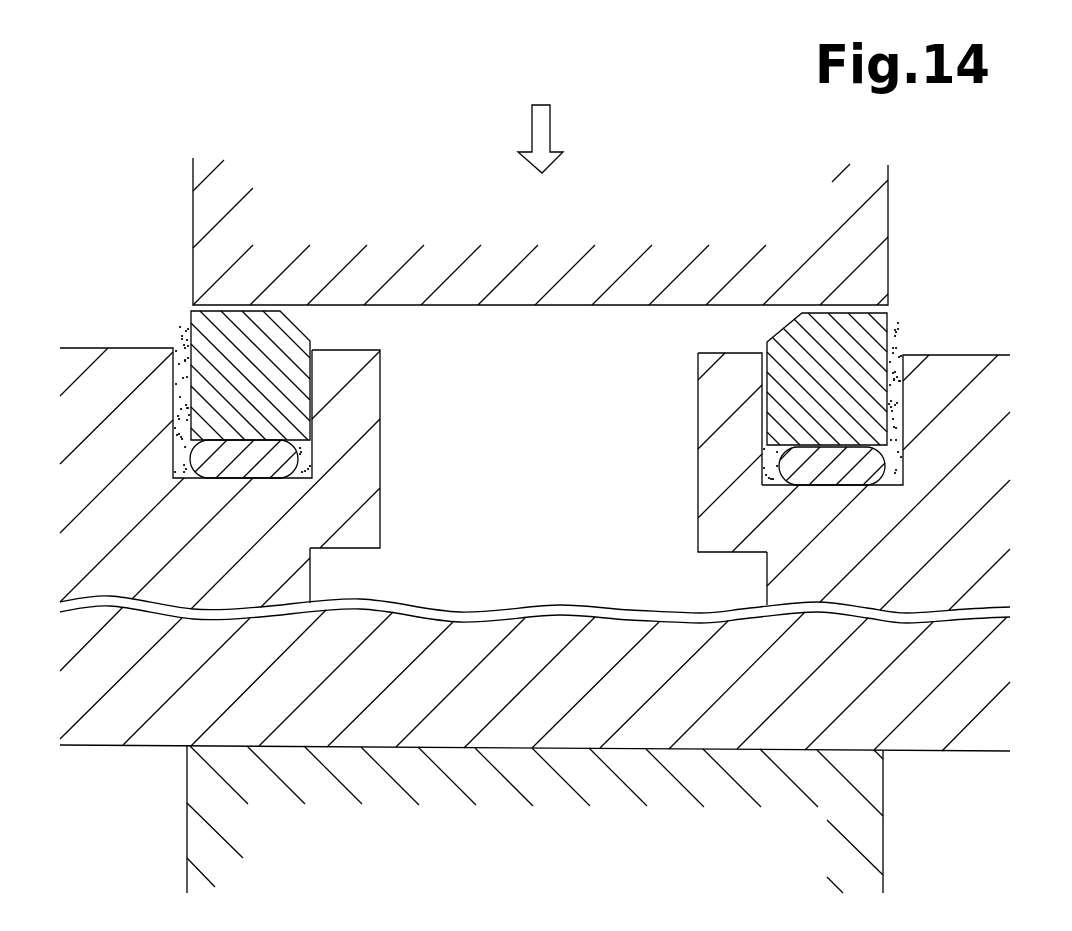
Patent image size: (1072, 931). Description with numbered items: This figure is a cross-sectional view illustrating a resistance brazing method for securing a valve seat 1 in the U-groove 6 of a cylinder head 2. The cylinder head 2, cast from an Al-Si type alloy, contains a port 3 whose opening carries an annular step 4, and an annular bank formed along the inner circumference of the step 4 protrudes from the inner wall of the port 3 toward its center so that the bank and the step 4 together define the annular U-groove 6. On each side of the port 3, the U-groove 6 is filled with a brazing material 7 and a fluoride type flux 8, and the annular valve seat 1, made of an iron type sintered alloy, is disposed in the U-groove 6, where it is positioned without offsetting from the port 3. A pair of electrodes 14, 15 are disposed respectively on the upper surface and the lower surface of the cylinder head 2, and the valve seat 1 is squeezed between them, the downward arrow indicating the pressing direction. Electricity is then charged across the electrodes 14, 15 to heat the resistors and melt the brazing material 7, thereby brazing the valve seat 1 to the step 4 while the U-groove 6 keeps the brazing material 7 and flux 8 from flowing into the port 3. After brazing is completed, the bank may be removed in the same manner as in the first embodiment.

The valve seat 1 is at (298, 320).
The cylinder head 2 is at (950, 367).
The port 3 is at (767, 572).
The annular step 4 is at (890, 478).
The U-groove 6 is at (255, 473).
The brazing material 7 is at (222, 475).
The flux 8 is at (180, 395).
The electrode 14 is at (888, 218).
The electrode 15 is at (883, 790).